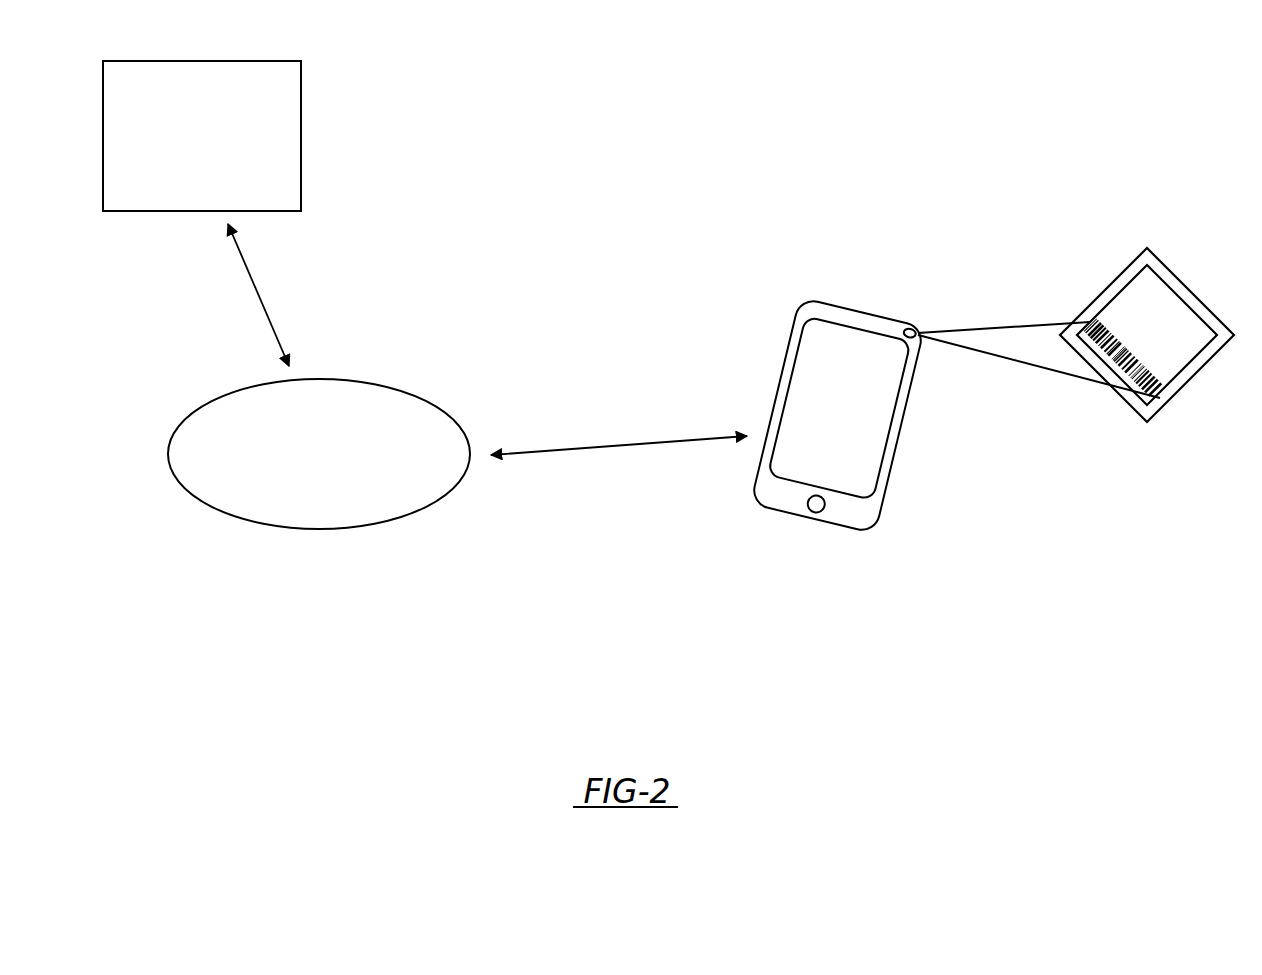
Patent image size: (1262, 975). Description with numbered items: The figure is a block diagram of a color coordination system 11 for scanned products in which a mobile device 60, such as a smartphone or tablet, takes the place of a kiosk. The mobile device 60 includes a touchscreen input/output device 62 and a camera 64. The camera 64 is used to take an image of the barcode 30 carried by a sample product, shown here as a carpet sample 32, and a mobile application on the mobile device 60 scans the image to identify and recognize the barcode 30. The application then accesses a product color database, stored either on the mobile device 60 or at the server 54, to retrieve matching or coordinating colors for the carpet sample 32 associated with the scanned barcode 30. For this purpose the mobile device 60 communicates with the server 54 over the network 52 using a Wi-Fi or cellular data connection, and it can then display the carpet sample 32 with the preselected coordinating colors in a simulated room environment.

The color coordination system 11 is at (597, 158).
The server 54 is at (262, 61).
The network 52 is at (171, 472).
The mobile device 60 is at (794, 314).
The touchscreen input/output device 62 is at (779, 393).
The camera 64 is at (908, 327).
The carpet sample 32 is at (1173, 273).
The barcode 30 is at (1093, 326).